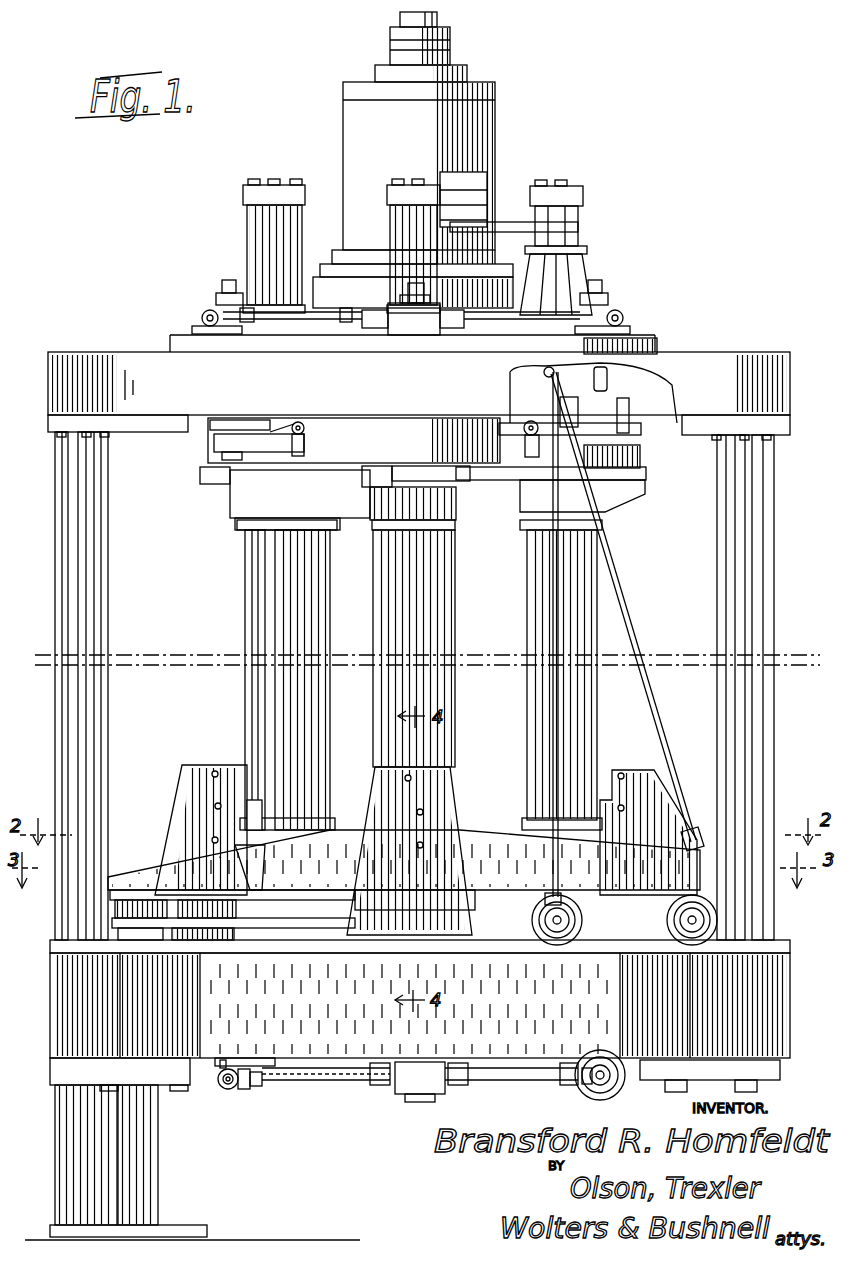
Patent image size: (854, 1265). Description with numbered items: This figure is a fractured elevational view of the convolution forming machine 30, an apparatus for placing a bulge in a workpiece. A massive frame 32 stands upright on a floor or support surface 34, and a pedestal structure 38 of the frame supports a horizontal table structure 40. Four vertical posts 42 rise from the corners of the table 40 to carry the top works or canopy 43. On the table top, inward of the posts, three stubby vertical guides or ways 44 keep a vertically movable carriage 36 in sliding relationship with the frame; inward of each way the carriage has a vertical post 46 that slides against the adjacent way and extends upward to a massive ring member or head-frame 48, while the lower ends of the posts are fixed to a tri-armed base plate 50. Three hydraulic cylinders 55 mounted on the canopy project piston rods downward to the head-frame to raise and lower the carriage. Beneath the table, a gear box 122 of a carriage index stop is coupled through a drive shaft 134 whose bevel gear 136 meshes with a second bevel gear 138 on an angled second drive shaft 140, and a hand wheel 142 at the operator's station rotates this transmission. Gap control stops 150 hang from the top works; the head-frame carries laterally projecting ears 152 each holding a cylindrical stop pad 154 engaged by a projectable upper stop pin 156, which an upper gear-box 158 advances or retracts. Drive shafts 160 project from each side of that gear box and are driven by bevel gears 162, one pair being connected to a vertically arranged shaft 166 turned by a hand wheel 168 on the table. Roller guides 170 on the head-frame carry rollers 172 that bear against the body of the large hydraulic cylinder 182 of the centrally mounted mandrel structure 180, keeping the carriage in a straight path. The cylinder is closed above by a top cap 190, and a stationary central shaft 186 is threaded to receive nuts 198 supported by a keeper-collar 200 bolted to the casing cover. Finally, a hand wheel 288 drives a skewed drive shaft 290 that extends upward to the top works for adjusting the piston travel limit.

The convolution forming machine 30 is at (155, 322).
The frame 32 is at (50, 595).
The floor or support surface 34 is at (290, 1218).
The vertically movable carriage 36 is at (243, 626).
The pedestal structure 38 is at (55, 1140).
The table structure 40 is at (55, 1014).
The vertical posts 42 is at (722, 545).
The top works or canopy 43 is at (62, 380).
The vertical guides or ways 44 is at (218, 746).
The carriage vertical post 46 is at (527, 705).
The ring member or head-frame 48 is at (236, 505).
The base plate 50 is at (128, 896).
The hydraulic cylinders 55 is at (280, 190).
The gear box 122 is at (410, 1102).
The drive shaft 134 is at (345, 1085).
The bevel gear 136 is at (245, 1092).
The second bevel gear 138 is at (225, 1090).
The second drive shaft 140 is at (228, 1092).
The hand wheel 142 is at (650, 1134).
The gap control stops 150 is at (225, 281).
The laterally projecting ears 152 is at (200, 478).
The cylindrical stop pad 154 is at (628, 455).
The upper stop pin 156 is at (632, 407).
The upper gear-box 158 is at (428, 333).
The drive shaft 160 is at (325, 320).
The bevel gears 162 is at (212, 312).
The vertically arranged shaft 166 is at (552, 595).
The hand wheel 168 is at (583, 924).
The roller guides 170 is at (302, 468).
The roller 172 is at (297, 422).
The mandrel structure 180 is at (468, 72).
The large hydraulic cylinder 182 is at (372, 304).
The stationary central shaft 186 is at (400, 18).
The top cap 190 is at (318, 270).
The nuts 198 is at (392, 40).
The keeper-collar 200 is at (378, 76).
The hand wheel 288 is at (712, 924).
The skewed drive shaft 290 is at (670, 738).